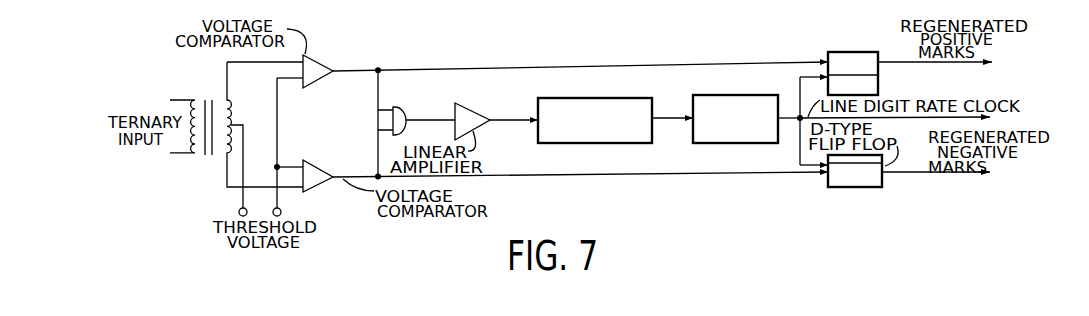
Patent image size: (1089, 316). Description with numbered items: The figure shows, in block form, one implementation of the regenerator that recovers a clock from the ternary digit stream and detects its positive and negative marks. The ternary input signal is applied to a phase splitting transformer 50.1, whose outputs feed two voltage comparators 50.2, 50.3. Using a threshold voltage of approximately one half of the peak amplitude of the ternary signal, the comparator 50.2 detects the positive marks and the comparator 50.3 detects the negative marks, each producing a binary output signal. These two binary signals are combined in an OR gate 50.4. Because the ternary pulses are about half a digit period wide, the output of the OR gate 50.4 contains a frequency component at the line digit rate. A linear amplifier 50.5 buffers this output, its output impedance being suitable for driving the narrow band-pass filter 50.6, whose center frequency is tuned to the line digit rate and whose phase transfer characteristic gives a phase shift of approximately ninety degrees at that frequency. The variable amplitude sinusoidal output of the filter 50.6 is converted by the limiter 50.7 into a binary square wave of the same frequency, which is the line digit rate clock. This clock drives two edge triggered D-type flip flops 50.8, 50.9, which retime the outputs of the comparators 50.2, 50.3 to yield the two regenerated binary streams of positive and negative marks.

The phase splitting transformer 50.1 is at (207, 88).
The voltage comparator 50.2 is at (313, 59).
The voltage comparator 50.3 is at (318, 186).
The OR gate 50.4 is at (418, 100).
The linear amplifier 50.5 is at (466, 107).
The band-pass filter 50.6 is at (578, 98).
The limiter 50.7 is at (706, 95).
The D-type flip flop 50.8 is at (853, 52).
The D-type flip flop 50.9 is at (857, 187).